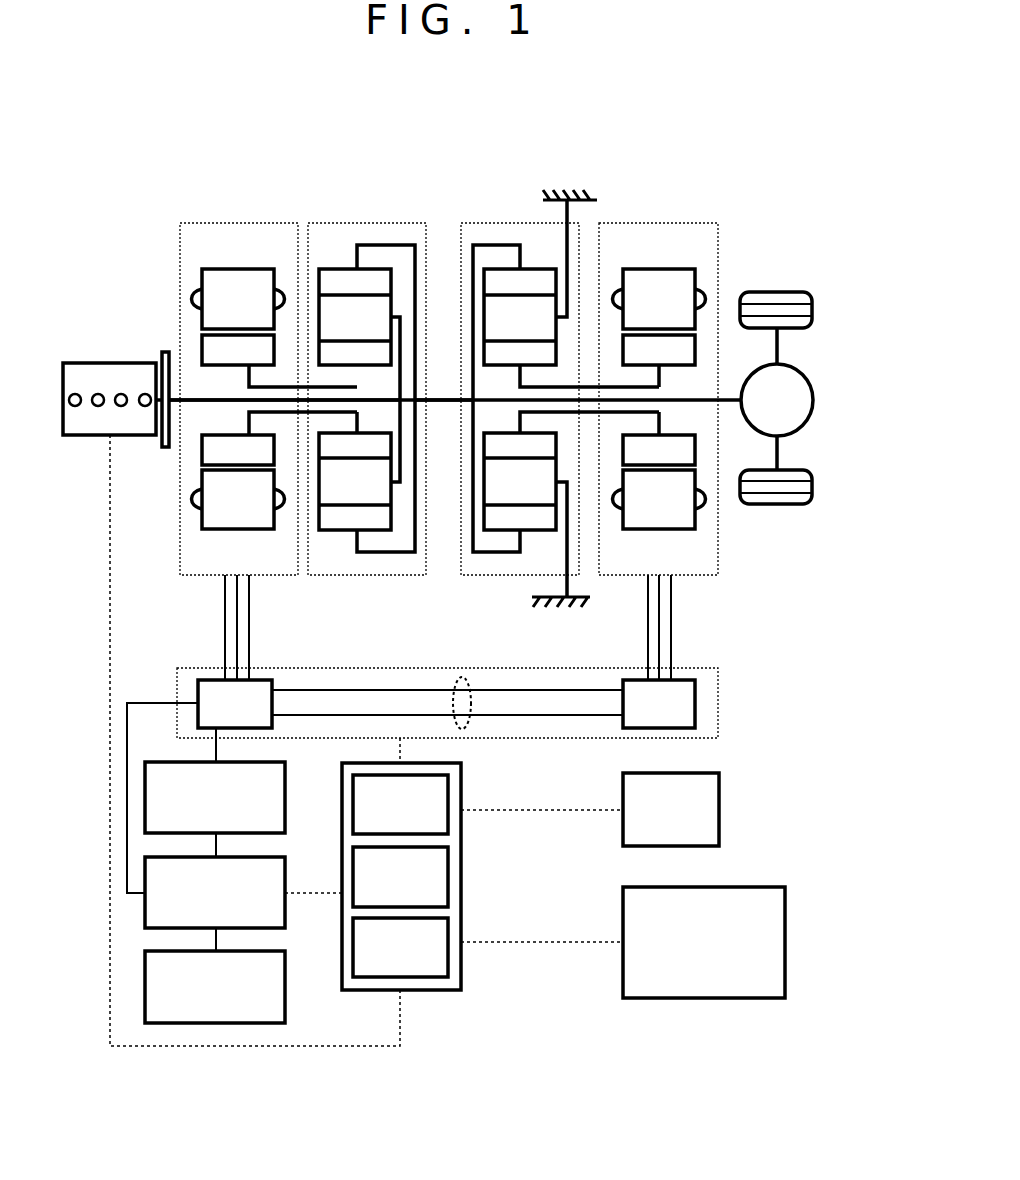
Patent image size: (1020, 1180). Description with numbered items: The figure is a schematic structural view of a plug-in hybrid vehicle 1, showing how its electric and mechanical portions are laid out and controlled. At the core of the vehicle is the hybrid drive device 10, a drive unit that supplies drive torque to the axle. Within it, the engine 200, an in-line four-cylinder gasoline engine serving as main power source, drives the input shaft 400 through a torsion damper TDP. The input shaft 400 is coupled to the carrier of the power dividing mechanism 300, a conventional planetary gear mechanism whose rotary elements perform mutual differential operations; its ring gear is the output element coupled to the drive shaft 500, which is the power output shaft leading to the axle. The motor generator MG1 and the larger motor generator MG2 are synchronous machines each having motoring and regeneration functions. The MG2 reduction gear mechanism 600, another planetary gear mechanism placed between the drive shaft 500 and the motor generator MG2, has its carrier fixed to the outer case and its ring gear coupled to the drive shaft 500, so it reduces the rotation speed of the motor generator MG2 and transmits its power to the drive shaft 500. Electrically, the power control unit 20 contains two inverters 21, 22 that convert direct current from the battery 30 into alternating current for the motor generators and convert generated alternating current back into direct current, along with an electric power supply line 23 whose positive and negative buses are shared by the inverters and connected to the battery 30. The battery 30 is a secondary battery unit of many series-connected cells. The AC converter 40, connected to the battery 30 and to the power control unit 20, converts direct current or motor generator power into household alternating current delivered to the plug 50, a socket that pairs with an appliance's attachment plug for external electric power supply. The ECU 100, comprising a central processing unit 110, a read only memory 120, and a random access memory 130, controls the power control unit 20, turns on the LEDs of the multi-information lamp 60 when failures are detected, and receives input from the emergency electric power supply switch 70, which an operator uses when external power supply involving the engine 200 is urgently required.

The hybrid vehicle 1 is at (133, 137).
The hybrid drive device 10 is at (156, 256).
The engine 200 is at (106, 363).
The torsion damper TDP is at (163, 352).
The motor generator MG1 is at (268, 439).
The motor generator MG2 is at (658, 439).
The power dividing mechanism 300 is at (367, 387).
The MG2 reduction gear mechanism 600 is at (560, 398).
The input shaft 400 is at (284, 388).
The drive shaft 500 is at (444, 388).
The power control unit 20 is at (476, 682).
The inverter 21 is at (695, 700).
The inverter 22 is at (272, 680).
The electric power supply line 23 is at (462, 678).
The battery 30 is at (285, 770).
The AC converter 40 is at (285, 857).
The plug 50 is at (285, 951).
The multi-information lamp 60 is at (719, 774).
The emergency electric power supply switch 70 is at (785, 890).
The ECU 100 is at (441, 869).
The central processing unit 110 is at (448, 800).
The read only memory 120 is at (448, 870).
The random access memory 130 is at (461, 918).